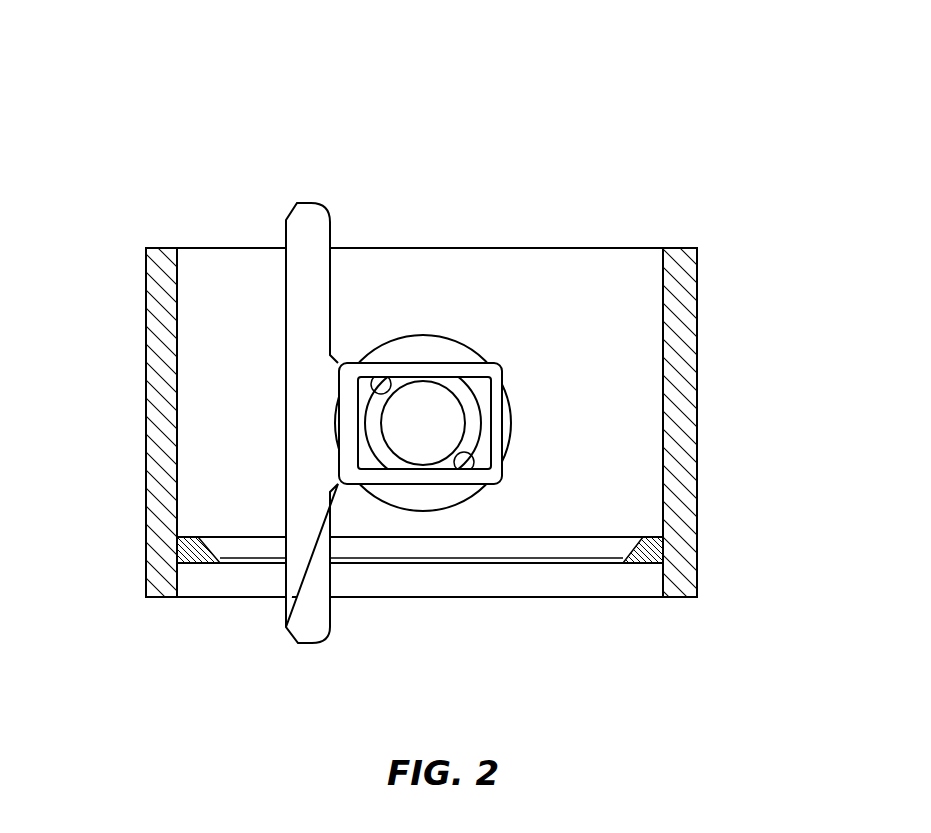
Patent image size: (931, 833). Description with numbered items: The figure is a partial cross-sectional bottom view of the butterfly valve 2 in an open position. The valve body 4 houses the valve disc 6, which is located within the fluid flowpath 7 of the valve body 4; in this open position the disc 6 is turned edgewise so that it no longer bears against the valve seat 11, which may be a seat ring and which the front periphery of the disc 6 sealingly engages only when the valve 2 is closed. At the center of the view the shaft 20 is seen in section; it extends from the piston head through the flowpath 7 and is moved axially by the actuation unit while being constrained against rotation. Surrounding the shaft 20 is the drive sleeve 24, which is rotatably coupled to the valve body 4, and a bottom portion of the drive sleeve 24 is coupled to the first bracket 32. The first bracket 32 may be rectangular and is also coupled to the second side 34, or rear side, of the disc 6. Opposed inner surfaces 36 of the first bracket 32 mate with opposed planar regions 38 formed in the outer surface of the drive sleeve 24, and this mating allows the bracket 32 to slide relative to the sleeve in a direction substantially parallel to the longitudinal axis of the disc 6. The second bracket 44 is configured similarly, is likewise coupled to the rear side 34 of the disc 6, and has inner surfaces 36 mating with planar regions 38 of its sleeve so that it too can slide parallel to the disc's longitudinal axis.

The butterfly valve 2 is at (194, 125).
The valve body 4 is at (160, 410).
The valve disc 6 is at (298, 325).
The fluid flowpath 7 is at (542, 270).
The valve seat 11 is at (193, 552).
The shaft 20 is at (438, 434).
The drive sleeve 24 is at (467, 397).
The first bracket 32 is at (497, 428).
The second side of the disc 34 is at (335, 278).
The opposed inner surfaces 36 is at (396, 378).
The opposed planar regions 38 is at (423, 378).
The second bracket 44 is at (423, 423).